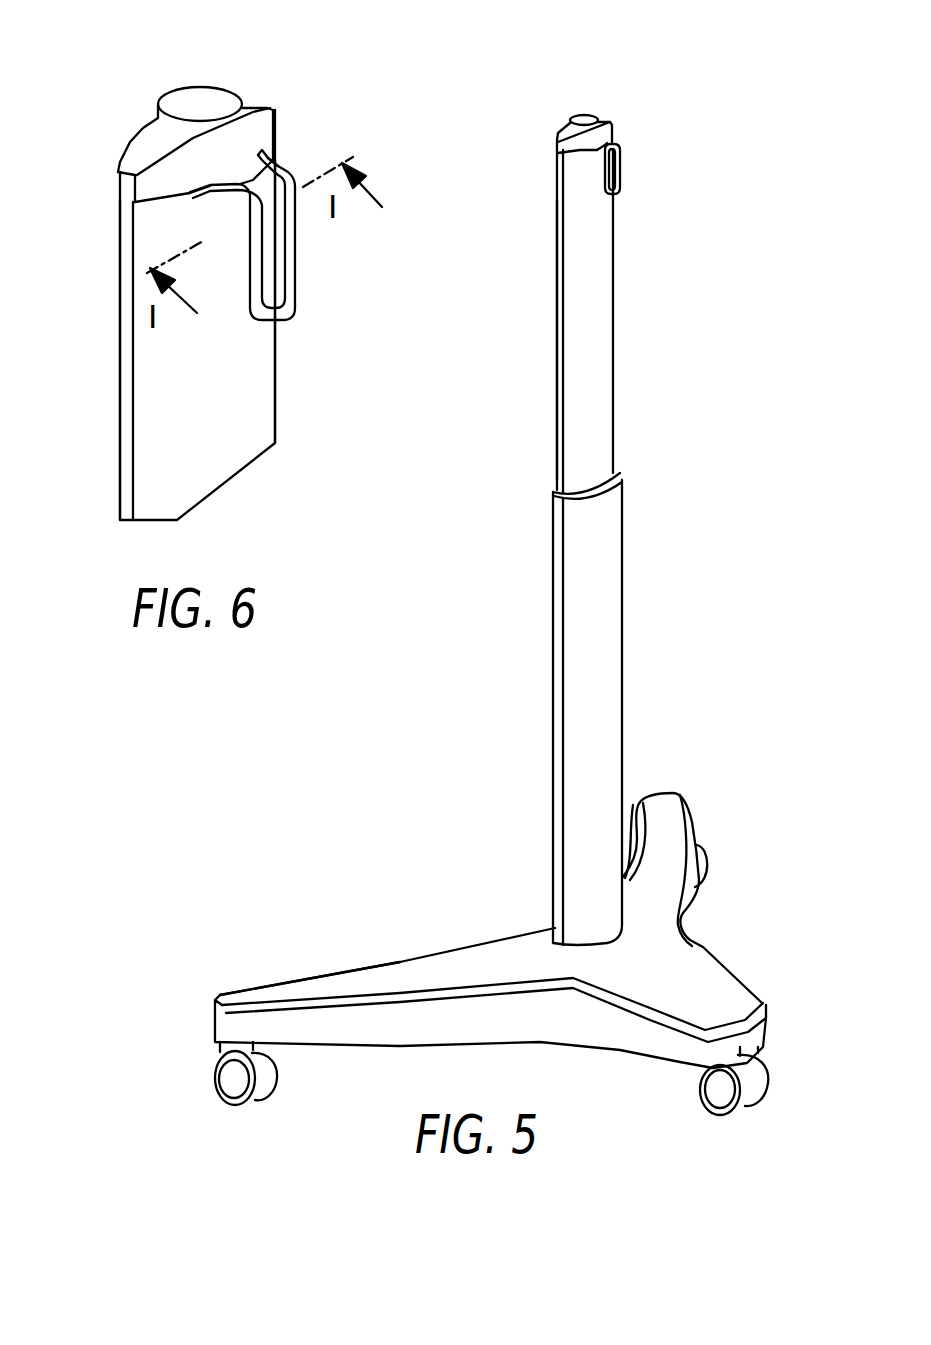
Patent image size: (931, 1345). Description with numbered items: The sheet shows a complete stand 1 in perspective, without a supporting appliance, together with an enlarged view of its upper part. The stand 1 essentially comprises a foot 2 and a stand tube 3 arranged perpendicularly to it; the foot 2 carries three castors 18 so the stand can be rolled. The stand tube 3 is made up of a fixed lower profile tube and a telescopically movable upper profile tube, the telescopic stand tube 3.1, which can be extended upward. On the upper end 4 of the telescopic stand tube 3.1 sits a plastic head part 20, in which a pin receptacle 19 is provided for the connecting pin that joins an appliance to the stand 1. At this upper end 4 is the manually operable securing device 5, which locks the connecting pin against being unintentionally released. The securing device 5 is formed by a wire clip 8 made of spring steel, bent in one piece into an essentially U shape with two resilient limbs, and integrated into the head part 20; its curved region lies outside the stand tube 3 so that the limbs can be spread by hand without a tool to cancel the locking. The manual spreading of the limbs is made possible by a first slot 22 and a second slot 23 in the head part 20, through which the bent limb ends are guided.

In FIG. 6, the stand 1 is at (300, 374).
In FIG. 5, the stand 1 is at (660, 368).
In FIG. 5, the foot 2 is at (710, 990).
In FIG. 5, the stand tube 3 is at (582, 690).
In FIG. 6, the telescopic stand tube 3.1 is at (250, 420).
In FIG. 5, the telescopic stand tube 3.1 is at (605, 435).
In FIG. 6, the upper end 4 is at (300, 131).
In FIG. 5, the upper end 4 is at (530, 146).
In FIG. 6, the securing device 5 is at (298, 153).
In FIG. 5, the securing device 5 is at (630, 128).
In FIG. 6, the wire clip 8 is at (290, 283).
In FIG. 5, the wire clip 8 is at (620, 172).
In FIG. 5, the castor 18 is at (712, 868).
In FIG. 6, the pin receptacle 19 is at (190, 90).
In FIG. 5, the pin receptacle 19 is at (583, 92).
In FIG. 6, the head part 20 is at (105, 184).
In FIG. 6, the first slot 22 is at (178, 173).
In FIG. 6, the second slot 23 is at (256, 133).